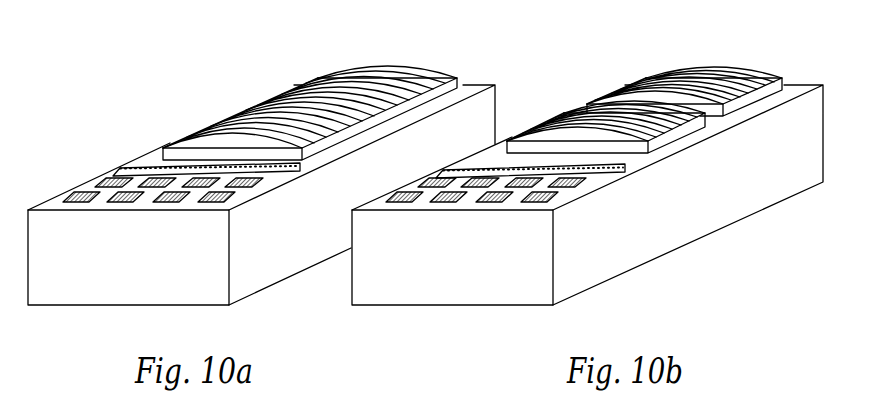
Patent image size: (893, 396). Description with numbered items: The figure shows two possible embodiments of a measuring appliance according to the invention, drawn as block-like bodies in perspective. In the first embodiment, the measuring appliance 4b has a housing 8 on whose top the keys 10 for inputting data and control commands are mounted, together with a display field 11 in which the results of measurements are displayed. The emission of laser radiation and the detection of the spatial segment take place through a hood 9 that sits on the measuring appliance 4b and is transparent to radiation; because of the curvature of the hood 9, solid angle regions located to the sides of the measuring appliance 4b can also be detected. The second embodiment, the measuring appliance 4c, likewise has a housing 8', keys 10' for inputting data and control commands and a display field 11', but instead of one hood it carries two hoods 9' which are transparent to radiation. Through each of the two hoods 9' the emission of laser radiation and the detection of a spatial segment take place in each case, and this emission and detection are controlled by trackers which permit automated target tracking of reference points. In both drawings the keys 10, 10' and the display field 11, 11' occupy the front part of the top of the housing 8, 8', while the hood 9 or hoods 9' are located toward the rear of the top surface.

In FIG. 10A, the measuring appliance 4b is at (184, 94).
In FIG. 10A, the housing 8 is at (261, 216).
In FIG. 10A, the hood 9 is at (310, 86).
In FIG. 10A, the keys 10 is at (136, 172).
In FIG. 10A, the display field 11 is at (179, 139).
In FIG. 10B, the measuring appliance 4c is at (715, 256).
In FIG. 10B, the housing 8' is at (585, 228).
In FIG. 10B, the hoods 9' is at (632, 83).
In FIG. 10B, the keys 10' is at (553, 253).
In FIG. 10B, the display field 11' is at (638, 208).